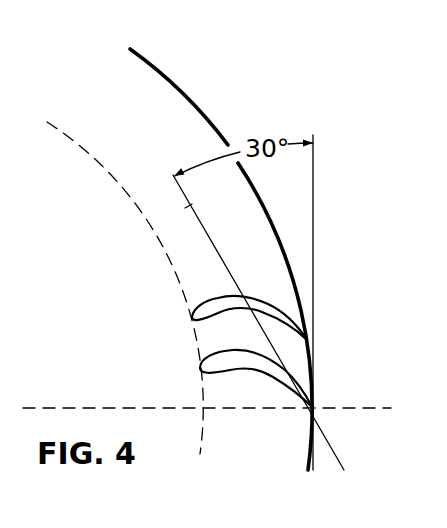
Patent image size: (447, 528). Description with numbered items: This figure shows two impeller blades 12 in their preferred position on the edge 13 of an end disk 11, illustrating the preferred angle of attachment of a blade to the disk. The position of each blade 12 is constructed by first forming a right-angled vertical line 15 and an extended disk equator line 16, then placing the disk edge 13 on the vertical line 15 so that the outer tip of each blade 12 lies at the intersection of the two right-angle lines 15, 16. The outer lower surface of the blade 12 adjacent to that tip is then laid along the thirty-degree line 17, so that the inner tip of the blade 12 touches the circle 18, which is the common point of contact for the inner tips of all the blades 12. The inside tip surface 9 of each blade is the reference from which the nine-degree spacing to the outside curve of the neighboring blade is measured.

The inside tip surface 9 is at (200, 369).
The end disk 11 is at (79, 365).
The blade 12 is at (217, 300).
The edge 13 is at (163, 75).
The vertical line 15 is at (314, 210).
The equator line 16 is at (367, 408).
The 30° line 17 is at (188, 206).
The circle 18 is at (101, 165).